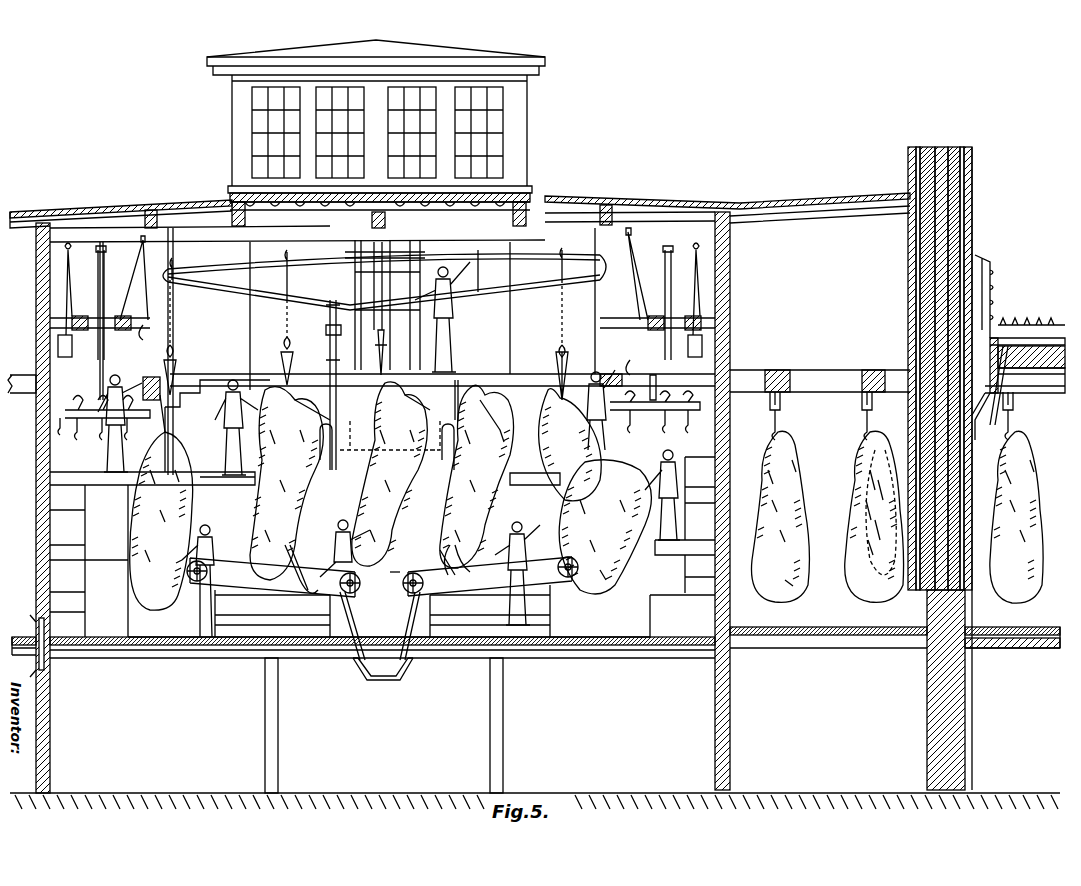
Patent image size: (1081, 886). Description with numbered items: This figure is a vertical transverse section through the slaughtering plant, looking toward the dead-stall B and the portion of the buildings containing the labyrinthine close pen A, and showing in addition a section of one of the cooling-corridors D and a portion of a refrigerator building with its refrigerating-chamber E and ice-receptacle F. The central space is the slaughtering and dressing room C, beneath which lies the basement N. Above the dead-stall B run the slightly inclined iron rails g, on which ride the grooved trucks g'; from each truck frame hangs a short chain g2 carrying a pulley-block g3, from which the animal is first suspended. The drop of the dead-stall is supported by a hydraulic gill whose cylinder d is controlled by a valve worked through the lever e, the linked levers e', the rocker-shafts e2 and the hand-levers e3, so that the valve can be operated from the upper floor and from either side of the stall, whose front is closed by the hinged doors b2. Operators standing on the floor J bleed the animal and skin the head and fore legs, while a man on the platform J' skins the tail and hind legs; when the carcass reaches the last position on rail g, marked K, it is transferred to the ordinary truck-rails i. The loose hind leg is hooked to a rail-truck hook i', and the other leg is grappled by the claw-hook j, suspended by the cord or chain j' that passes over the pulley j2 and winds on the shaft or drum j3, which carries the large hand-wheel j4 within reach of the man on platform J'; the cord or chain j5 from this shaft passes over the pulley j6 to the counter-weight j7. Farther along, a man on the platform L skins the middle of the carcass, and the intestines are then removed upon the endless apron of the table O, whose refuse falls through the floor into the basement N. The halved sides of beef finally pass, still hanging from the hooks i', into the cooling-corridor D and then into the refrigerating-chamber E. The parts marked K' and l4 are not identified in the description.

The labyrinthine close pen A is at (376, 134).
The dead-stall B is at (385, 305).
The slaughtering and dressing room C is at (401, 309).
The cooling-corridor D is at (489, 470).
The refrigerating-chamber E is at (1019, 517).
The ice-receptacle F is at (1018, 340).
The basement N is at (384, 725).
The table O is at (382, 608).
The floor J is at (389, 624).
The platform J' is at (448, 468).
The last position on rail g K is at (160, 384).
The stair steps K' is at (382, 547).
The platform L is at (403, 596).
The hinged door b2 is at (385, 352).
The cylinder d is at (396, 565).
The lever e is at (330, 385).
The lever e' is at (386, 442).
The rocker-shaft e2 is at (444, 400).
The hand-lever e3 is at (335, 322).
The inclined iron rail g is at (384, 282).
The grooved truck g' is at (376, 269).
The short chain g2 is at (433, 337).
The pulley-block g3 is at (570, 367).
The truck-rail i is at (888, 404).
The rail-truck hook i' is at (541, 415).
The claw-hook j is at (382, 318).
The cord or chain j' is at (404, 288).
The pulley j2 is at (381, 288).
The shaft or drum j3 is at (386, 279).
The hand-wheel j4 is at (83, 292).
The cord or chain j5 is at (382, 292).
The pulley j6 is at (390, 248).
The counter-weight j7 is at (380, 346).
The post l4 is at (640, 387).